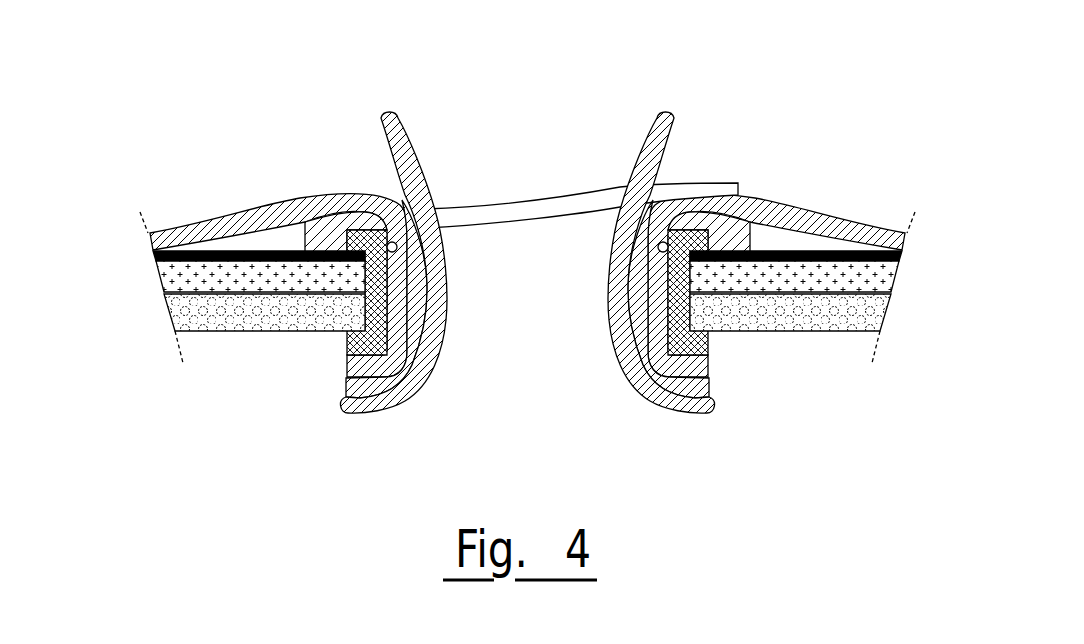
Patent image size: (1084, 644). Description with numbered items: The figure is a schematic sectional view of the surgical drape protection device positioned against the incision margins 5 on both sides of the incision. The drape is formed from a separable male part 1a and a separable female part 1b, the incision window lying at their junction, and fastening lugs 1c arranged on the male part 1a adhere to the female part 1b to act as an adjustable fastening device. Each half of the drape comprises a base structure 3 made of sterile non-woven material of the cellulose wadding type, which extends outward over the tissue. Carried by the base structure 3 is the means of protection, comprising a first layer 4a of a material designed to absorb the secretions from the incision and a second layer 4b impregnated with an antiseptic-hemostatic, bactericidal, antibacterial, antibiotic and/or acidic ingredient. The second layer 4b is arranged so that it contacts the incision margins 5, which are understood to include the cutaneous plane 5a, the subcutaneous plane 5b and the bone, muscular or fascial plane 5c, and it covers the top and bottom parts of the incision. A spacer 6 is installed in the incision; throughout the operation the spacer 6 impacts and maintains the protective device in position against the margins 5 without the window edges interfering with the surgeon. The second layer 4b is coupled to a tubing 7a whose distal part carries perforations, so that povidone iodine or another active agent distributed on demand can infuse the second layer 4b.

The male part 1a is at (231, 183).
The female part 1b is at (824, 186).
The fastening lugs 1c is at (537, 203).
The base structure 3 is at (190, 230).
The first layer 4a is at (330, 230).
The second layer 4b is at (365, 243).
The incision margins 5 is at (519, 323).
The cutaneous plane 5a is at (183, 258).
The subcutaneous plane 5b is at (235, 275).
The bone, muscular or fascial plane 5c is at (283, 310).
The spacer 6 is at (384, 113).
The tubing 7a is at (390, 243).